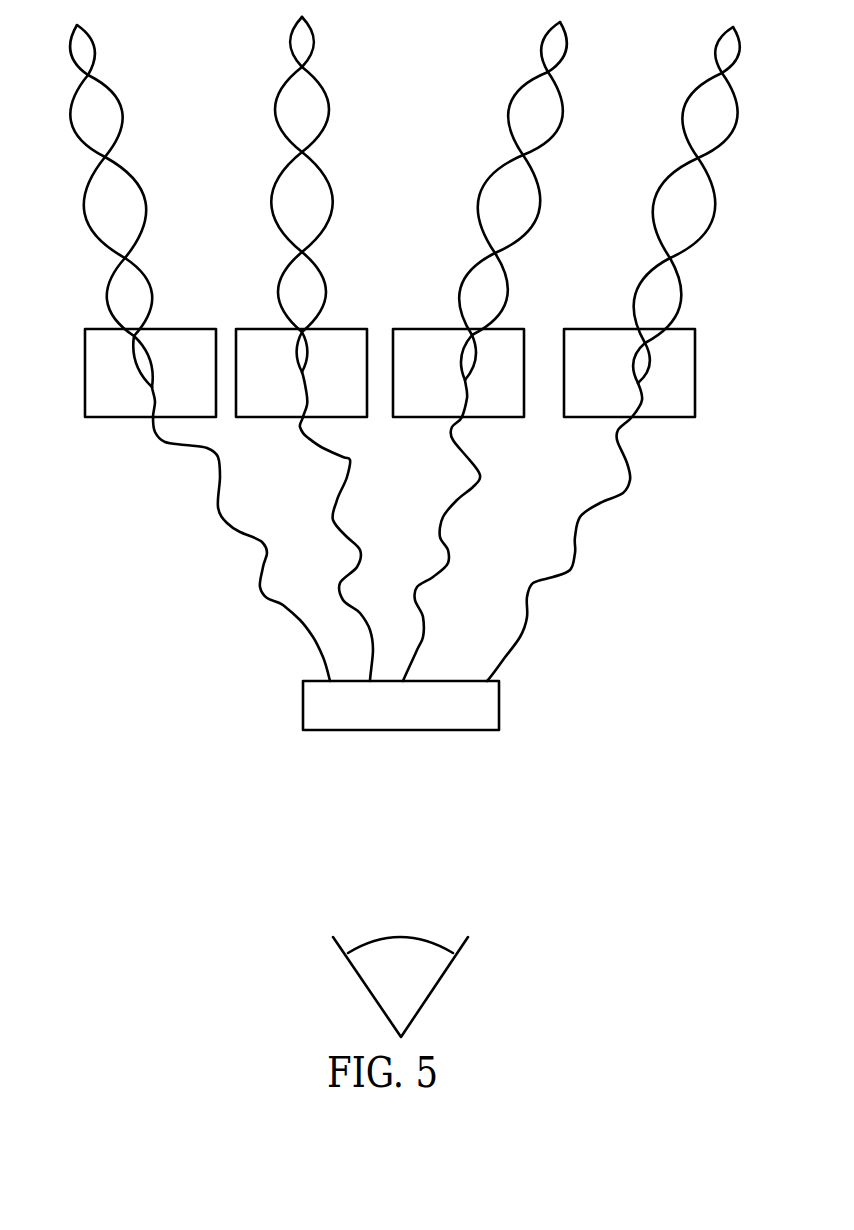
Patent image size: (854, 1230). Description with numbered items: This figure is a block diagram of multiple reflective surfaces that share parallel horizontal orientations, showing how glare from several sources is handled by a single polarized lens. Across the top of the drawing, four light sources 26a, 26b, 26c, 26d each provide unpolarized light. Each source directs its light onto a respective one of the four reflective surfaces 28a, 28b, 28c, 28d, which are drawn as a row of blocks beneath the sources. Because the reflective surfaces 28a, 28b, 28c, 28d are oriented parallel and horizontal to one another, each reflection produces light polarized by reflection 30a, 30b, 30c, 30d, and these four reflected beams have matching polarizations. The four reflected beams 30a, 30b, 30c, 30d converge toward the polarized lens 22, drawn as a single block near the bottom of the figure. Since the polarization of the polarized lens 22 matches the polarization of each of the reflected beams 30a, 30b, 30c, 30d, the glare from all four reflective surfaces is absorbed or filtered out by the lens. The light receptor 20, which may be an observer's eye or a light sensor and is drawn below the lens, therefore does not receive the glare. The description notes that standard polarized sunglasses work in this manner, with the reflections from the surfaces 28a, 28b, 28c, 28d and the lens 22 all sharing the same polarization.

The light source 26a is at (90, 188).
The light source 26b is at (278, 94).
The light source 26c is at (557, 97).
The light source 26d is at (672, 186).
The reflective surface 28a is at (92, 329).
The reflective surface 28b is at (271, 329).
The reflective surface 28c is at (442, 329).
The reflective surface 28d is at (606, 329).
The light polarized by reflection 30a is at (220, 510).
The light polarized by reflection 30b is at (350, 460).
The light polarized by reflection 30c is at (480, 475).
The light polarized by reflection 30d is at (630, 480).
The polarized lens 22 is at (499, 700).
The light receptor 20 is at (453, 963).